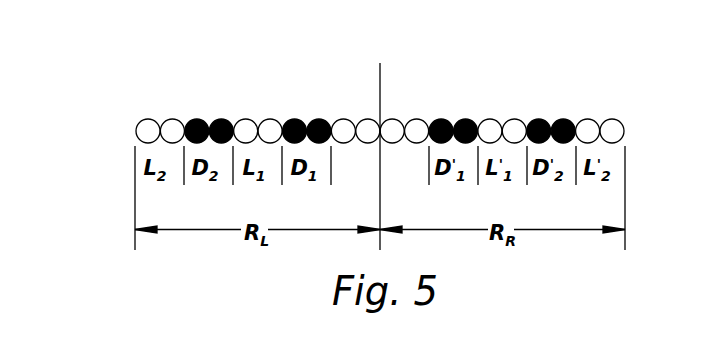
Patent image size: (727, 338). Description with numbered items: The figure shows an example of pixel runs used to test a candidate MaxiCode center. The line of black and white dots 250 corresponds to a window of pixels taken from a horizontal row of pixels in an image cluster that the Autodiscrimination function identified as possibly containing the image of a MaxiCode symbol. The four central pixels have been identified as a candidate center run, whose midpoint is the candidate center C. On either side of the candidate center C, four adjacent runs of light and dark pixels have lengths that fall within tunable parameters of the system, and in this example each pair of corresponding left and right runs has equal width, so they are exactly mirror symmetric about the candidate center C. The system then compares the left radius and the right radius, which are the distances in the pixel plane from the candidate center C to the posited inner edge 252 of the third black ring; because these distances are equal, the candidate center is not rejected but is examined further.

The line of black and white dots 250 is at (233, 108).
The posited inner edge of the third black ring 252 is at (136, 129).
The candidate center C is at (383, 120).